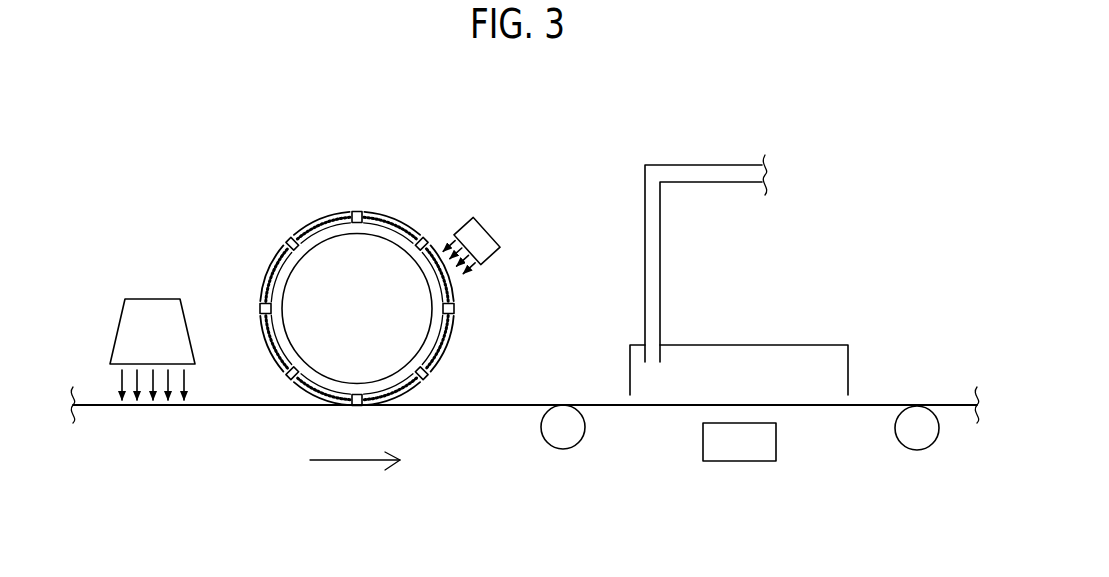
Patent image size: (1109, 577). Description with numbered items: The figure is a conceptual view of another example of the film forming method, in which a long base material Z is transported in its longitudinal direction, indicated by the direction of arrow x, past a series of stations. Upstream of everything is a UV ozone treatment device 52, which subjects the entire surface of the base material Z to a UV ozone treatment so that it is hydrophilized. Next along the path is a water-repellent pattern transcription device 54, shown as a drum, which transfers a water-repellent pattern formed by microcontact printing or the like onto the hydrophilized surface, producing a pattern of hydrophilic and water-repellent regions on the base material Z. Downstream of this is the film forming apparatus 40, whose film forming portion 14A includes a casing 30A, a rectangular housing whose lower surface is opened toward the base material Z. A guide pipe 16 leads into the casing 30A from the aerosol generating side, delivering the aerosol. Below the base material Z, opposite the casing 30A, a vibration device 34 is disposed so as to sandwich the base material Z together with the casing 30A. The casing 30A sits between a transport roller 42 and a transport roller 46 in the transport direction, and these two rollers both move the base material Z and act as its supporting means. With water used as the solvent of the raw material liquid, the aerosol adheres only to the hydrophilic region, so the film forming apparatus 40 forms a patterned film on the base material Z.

The film forming apparatus 40 is at (863, 136).
The UV ozone treatment device 52 is at (153, 276).
The water-repellent pattern transcription device 54 is at (361, 188).
The guide pipe 16 is at (712, 173).
The film forming portion 14A is at (774, 316).
The casing 30A is at (628, 360).
The transport roller 42 is at (563, 450).
The vibration device 34 is at (738, 448).
The transport roller 46 is at (918, 452).
The base material Z is at (242, 407).
The direction of arrow x is at (357, 462).